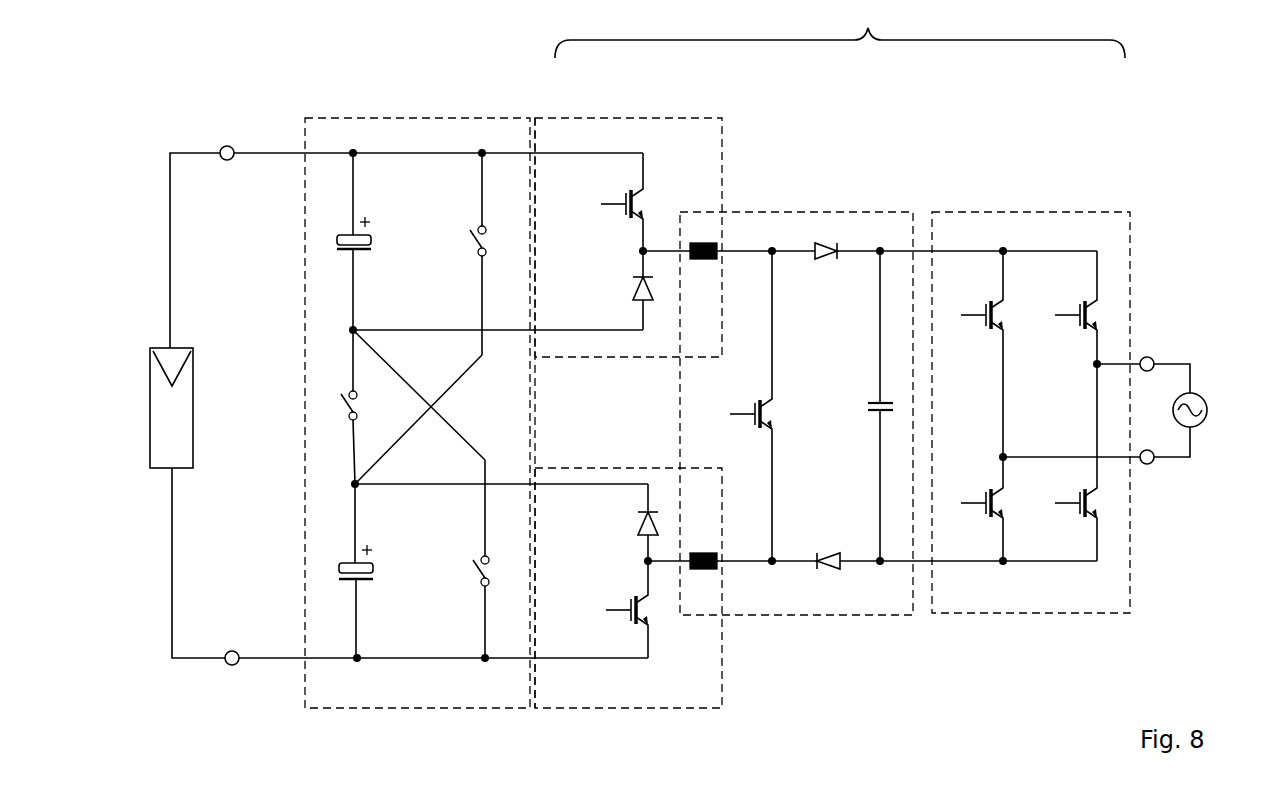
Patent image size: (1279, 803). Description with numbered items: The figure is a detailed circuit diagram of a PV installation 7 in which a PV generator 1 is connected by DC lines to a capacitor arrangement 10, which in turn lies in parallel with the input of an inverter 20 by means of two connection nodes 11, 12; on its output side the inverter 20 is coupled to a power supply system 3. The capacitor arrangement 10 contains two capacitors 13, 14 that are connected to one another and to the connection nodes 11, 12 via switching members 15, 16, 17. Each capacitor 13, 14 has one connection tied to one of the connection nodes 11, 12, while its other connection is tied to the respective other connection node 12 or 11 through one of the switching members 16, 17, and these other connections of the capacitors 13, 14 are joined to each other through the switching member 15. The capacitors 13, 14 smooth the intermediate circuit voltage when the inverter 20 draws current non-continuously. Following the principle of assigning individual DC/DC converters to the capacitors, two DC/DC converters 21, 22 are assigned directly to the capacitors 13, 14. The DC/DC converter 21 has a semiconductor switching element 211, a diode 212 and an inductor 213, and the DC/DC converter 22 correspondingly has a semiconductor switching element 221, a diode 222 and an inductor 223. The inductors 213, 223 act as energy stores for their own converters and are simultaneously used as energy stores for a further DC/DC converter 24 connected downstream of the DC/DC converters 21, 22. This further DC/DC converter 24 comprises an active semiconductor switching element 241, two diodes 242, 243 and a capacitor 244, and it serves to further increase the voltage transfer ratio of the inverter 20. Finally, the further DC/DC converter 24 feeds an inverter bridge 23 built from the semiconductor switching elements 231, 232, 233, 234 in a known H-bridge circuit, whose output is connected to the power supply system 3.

The PV generator 1 is at (150, 440).
The power supply system 3 is at (1197, 393).
The PV installation 7 is at (500, 57).
The capacitor arrangement 10 is at (347, 117).
The connection node 11 is at (400, 150).
The connection node 12 is at (430, 661).
The capacitor 13 is at (347, 251).
The capacitor 14 is at (376, 577).
The switching member 15 is at (345, 410).
The switching member 16 is at (472, 243).
The switching member 17 is at (474, 578).
The inverter 20 is at (840, 29).
The DC/DC converter 21 is at (640, 117).
The DC/DC converter 22 is at (575, 710).
The inverter bridge 23 is at (1030, 211).
The further DC/DC converter 24 is at (830, 211).
The semiconductor switching element 211 is at (620, 210).
The diode 212 is at (643, 302).
The inductor 213 is at (701, 242).
The semiconductor switching element 221 is at (630, 605).
The diode 222 is at (647, 482).
The inductor 223 is at (703, 572).
The semiconductor switching element 231 is at (986, 300).
The semiconductor switching element 232 is at (988, 520).
The semiconductor switching element 233 is at (1085, 300).
The semiconductor switching element 234 is at (1082, 520).
The active semiconductor switching element 241 is at (770, 422).
The diode 242 is at (830, 245).
The diode 243 is at (825, 572).
The capacitor 244 is at (877, 412).